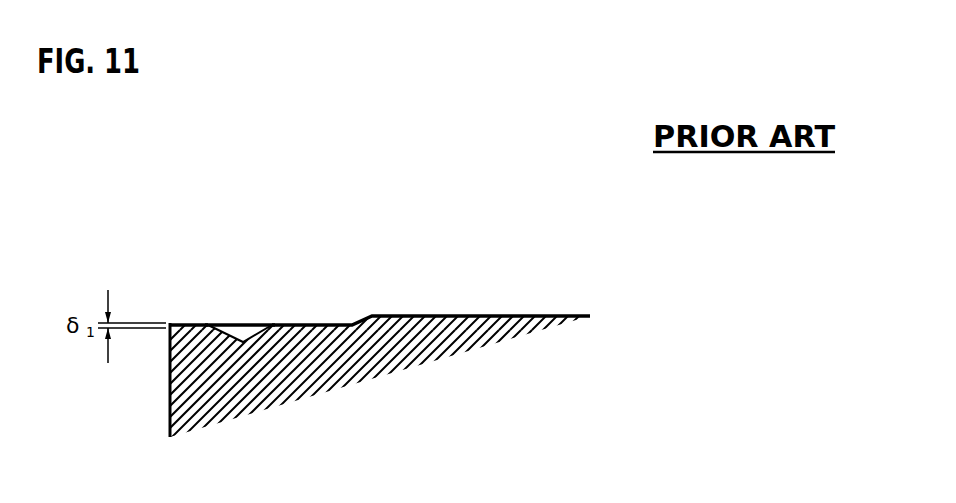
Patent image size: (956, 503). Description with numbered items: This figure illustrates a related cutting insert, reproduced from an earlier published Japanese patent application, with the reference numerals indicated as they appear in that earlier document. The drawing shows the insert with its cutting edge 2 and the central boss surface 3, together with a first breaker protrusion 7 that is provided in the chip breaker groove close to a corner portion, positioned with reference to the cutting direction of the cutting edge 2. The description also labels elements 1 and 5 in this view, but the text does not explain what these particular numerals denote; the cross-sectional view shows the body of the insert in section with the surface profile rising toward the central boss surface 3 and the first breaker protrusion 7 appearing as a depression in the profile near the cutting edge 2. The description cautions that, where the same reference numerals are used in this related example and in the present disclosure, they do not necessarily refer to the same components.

The steel material / workpiece 1 is at (522, 301).
The cutting edge 2 is at (169, 327).
The central boss surface 3 is at (410, 313).
The corner edge portion 5 is at (178, 323).
The first breaker protrusion 7 is at (270, 324).